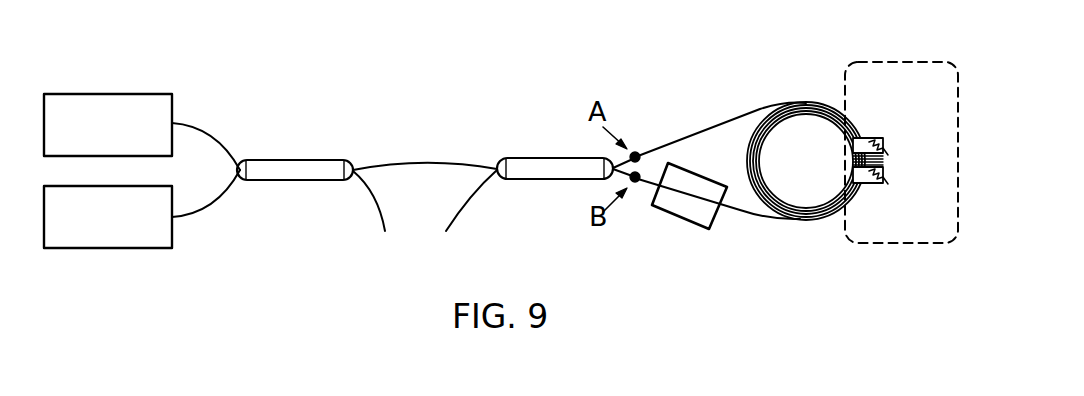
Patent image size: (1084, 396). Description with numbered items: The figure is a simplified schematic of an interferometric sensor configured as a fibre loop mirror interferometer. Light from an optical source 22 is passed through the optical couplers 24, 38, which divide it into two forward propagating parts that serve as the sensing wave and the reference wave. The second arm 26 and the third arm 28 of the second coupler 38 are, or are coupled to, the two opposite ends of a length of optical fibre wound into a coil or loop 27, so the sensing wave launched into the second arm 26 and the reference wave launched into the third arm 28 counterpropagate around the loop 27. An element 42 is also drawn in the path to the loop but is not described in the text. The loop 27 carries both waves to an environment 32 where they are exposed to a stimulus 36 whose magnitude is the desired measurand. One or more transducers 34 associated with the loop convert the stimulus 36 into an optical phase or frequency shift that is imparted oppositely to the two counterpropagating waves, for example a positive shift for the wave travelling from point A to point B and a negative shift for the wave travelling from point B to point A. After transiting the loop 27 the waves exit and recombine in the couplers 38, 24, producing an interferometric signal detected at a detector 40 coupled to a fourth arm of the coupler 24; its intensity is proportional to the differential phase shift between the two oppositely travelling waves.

The optical source 22 is at (125, 139).
The detector 40 is at (125, 231).
The optical coupler 24 is at (306, 182).
The second coupler 38 is at (547, 181).
The second arm 26 is at (727, 117).
The third arm 28 is at (746, 218).
The polarizer 42 is at (670, 222).
The coil or loop 27 is at (812, 222).
The environment 32 is at (918, 100).
The transducer 34 is at (885, 140).
The stimulus 36 is at (887, 186).